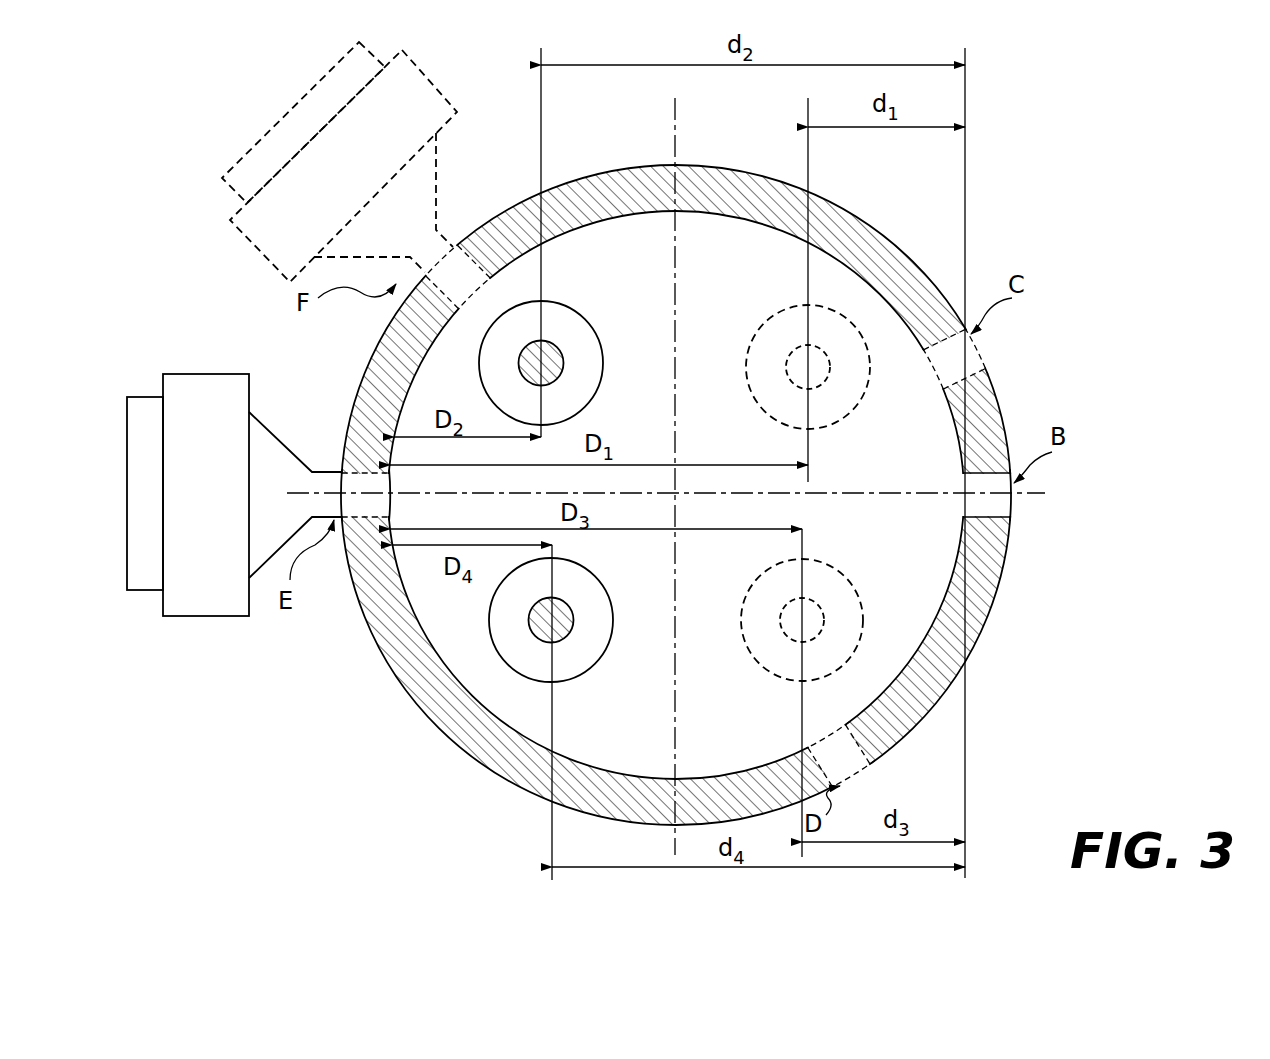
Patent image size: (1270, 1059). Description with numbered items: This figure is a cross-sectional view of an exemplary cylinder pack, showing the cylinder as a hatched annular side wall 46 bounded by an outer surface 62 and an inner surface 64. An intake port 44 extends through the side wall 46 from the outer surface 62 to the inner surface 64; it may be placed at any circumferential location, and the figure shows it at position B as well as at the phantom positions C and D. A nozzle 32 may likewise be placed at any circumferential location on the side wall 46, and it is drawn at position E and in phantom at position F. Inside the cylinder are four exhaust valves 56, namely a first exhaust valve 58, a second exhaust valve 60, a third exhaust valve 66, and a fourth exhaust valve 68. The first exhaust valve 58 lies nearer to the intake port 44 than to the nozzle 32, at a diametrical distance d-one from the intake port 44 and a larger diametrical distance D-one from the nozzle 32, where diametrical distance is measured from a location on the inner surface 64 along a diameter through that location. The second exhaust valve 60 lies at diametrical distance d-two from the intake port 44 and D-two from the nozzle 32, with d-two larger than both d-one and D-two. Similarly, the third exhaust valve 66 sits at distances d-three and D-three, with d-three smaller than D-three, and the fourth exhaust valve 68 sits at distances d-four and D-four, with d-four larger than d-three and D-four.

The nozzle 32 is at (270, 200).
The intake port 44 is at (985, 355).
The side wall 46 is at (706, 495).
The exhaust valves 56 is at (705, 332).
The first exhaust valve 58 is at (866, 373).
The second exhaust valve 60 is at (597, 365).
The outer surface 62 is at (992, 607).
The inner surface 64 is at (948, 560).
The third exhaust valve 66 is at (858, 608).
The fourth exhaust valve 68 is at (604, 612).